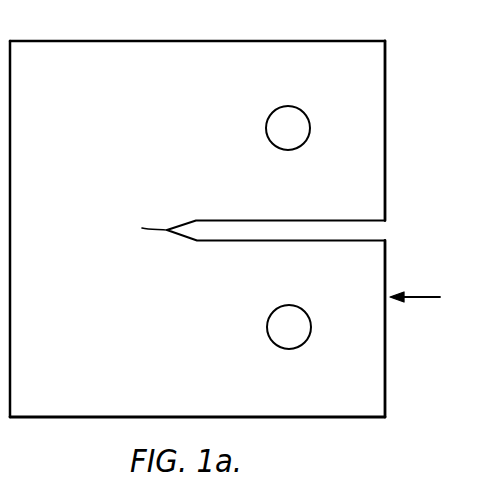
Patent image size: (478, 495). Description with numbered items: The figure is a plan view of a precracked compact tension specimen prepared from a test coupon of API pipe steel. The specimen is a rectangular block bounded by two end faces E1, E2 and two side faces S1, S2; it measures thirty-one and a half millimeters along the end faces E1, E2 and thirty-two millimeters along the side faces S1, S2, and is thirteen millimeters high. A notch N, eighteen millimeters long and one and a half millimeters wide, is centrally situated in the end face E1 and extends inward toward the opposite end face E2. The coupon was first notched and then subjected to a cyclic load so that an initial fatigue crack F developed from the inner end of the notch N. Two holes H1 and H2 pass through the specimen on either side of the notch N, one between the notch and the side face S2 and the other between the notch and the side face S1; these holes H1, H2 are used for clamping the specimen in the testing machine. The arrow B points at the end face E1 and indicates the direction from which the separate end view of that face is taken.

The side face S2 is at (40, 41).
The side face S1 is at (337, 419).
The end face E1 is at (387, 379).
The end face E2 is at (10, 385).
The notch N is at (360, 229).
The initial fatigue crack F is at (155, 231).
The hole H1 is at (288, 130).
The hole H2 is at (293, 325).
The arrow B is at (415, 289).